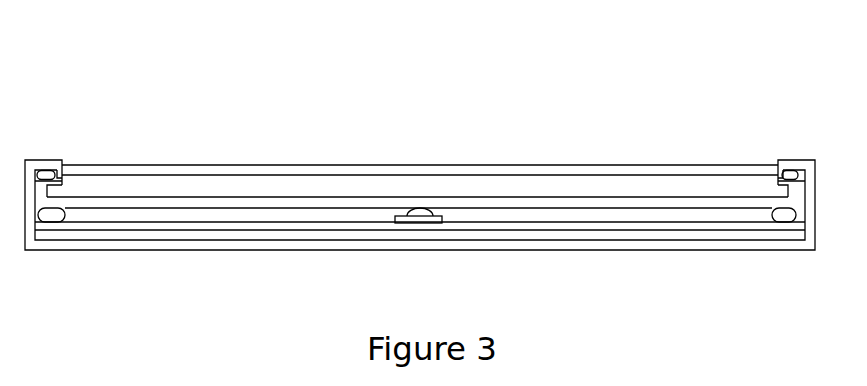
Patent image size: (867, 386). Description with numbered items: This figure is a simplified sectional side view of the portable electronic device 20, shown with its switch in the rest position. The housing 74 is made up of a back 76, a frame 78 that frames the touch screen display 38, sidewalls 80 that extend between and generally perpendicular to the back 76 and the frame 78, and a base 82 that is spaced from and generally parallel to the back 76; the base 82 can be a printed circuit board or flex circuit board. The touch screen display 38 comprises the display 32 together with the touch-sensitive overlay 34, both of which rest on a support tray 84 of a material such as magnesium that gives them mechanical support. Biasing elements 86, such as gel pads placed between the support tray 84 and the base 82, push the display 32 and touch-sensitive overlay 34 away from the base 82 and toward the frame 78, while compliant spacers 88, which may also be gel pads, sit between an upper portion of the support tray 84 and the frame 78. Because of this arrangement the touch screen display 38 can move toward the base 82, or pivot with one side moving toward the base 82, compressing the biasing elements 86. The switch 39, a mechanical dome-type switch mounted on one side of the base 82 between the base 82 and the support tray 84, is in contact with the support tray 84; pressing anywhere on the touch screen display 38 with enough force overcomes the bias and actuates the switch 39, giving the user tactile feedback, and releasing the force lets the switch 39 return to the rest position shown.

The portable electronic device 20 is at (614, 62).
The touch screen display 38 is at (146, 156).
The display 32 is at (323, 183).
The touch-sensitive overlay 34 is at (395, 168).
The frame 78 is at (50, 166).
The compliant spacers 88 is at (790, 170).
The support tray 84 is at (793, 193).
The sidewalls 80 is at (810, 228).
The biasing elements 86 is at (786, 220).
The base 82 is at (252, 225).
The back 76 is at (485, 243).
The switch 39 is at (418, 214).
The housing 74 is at (38, 262).